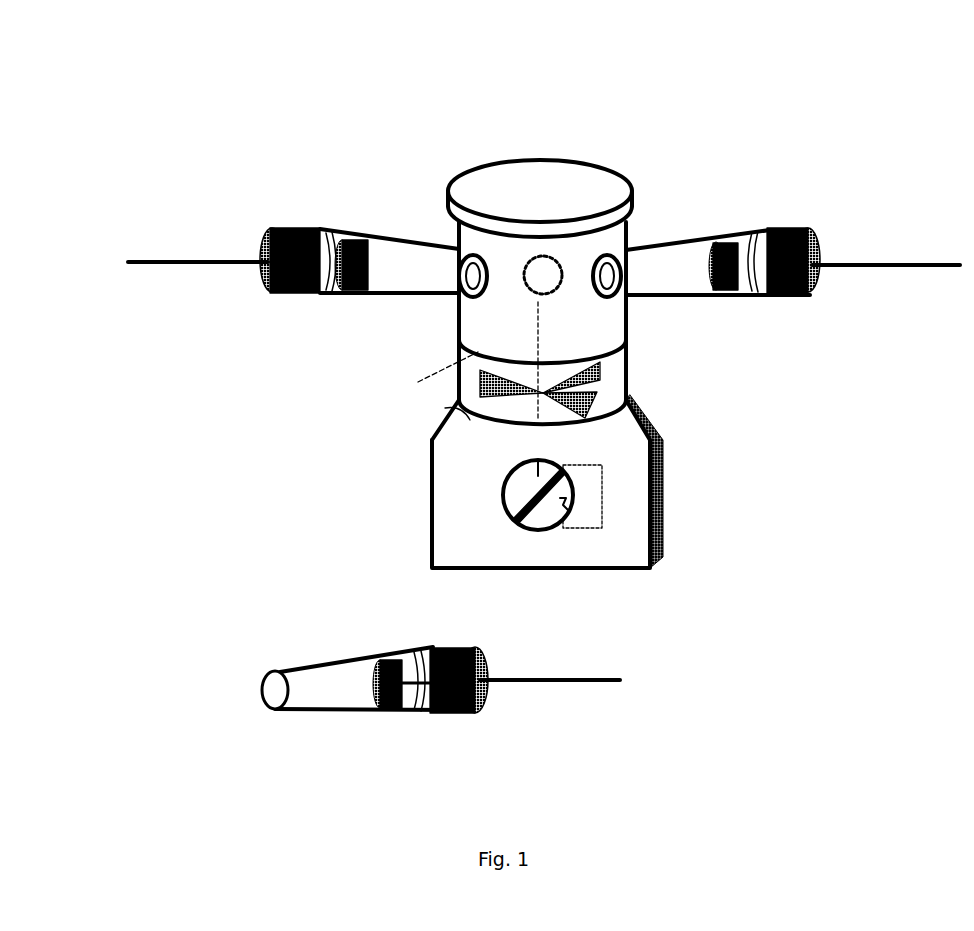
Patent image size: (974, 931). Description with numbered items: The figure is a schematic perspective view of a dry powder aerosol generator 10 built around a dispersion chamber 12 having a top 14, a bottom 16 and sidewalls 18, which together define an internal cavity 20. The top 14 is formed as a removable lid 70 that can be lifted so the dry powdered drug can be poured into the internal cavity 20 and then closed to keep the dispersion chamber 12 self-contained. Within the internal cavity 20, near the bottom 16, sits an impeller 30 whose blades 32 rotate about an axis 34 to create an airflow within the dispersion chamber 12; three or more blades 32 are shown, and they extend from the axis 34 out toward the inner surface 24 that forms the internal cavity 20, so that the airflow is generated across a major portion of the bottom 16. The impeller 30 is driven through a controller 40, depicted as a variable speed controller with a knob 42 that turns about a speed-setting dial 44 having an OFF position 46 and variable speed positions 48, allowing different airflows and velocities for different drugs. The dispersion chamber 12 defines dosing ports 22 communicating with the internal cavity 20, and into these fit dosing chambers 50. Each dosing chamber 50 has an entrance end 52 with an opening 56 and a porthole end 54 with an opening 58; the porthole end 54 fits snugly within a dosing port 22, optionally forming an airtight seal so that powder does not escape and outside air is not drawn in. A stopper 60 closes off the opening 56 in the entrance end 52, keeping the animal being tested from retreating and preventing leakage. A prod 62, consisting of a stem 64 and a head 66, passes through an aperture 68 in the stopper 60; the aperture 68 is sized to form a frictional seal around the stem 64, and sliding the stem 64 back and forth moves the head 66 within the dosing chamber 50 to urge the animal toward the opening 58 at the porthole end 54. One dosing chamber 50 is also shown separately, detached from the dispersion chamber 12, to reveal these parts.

The dry powder aerosol generator 10 is at (346, 117).
The dispersion chamber 12 is at (533, 140).
The top 14 is at (498, 190).
The bottom 16 is at (462, 424).
The sidewalls 18 is at (458, 322).
The internal cavity 20 is at (427, 376).
The dosing ports 22 is at (502, 298).
The inner surface 24 is at (506, 335).
The impeller 30 is at (575, 421).
The blades 32 is at (625, 378).
The axis 34 is at (598, 364).
The controller 40 is at (598, 572).
The knob 42 is at (550, 516).
The speed-setting dial 44 is at (545, 467).
The OFF position 46 is at (538, 470).
The variable speed positions 48 is at (602, 473).
The dosing chamber 50 is at (323, 295).
The entrance end 52 is at (337, 240).
The porthole end 54 is at (468, 248).
The opening 56 is at (763, 233).
The opening 58 is at (456, 258).
The stopper 60 is at (262, 292).
The prod 62 is at (330, 240).
The stem 64 is at (268, 262).
The head 66 is at (383, 293).
The aperture 68 is at (262, 268).
The lid 70 is at (586, 184).